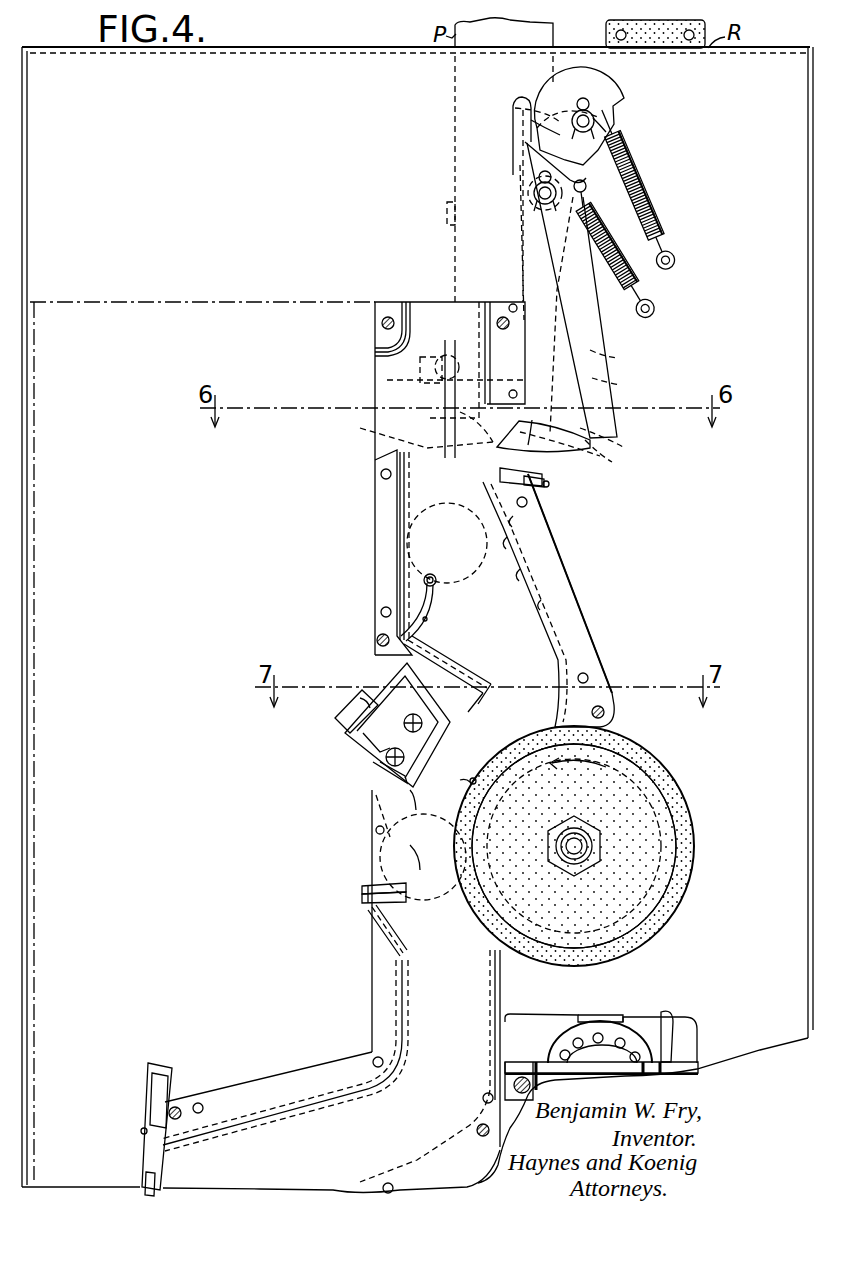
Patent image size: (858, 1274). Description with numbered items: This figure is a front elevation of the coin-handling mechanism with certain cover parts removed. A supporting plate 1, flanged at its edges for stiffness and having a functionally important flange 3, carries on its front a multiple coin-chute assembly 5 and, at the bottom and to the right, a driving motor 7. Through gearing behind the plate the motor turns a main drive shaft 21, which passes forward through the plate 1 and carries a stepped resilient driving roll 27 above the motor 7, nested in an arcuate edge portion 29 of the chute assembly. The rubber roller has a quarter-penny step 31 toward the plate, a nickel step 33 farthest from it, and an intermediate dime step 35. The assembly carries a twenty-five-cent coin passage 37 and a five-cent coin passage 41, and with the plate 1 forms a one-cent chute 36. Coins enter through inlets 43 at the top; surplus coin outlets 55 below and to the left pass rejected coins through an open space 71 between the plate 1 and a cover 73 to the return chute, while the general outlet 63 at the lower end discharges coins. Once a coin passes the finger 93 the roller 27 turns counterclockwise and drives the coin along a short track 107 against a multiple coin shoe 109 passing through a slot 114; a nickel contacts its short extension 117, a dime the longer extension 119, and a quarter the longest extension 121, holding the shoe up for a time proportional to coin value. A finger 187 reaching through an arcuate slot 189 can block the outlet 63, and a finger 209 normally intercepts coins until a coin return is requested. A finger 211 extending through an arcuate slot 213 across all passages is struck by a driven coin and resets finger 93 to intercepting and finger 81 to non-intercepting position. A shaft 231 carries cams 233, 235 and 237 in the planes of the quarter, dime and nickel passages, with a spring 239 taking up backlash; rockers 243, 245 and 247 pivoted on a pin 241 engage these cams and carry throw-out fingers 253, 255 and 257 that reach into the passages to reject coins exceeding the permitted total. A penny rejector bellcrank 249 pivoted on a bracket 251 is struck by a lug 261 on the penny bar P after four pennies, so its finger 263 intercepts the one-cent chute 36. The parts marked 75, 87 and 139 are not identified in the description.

The supporting plate 1 is at (278, 72).
The flange 3 is at (254, 52).
The multiple coin-chute assembly 5 is at (363, 540).
The driving motor 7 is at (640, 1032).
The main drive shaft 21 is at (588, 850).
The stepped resilient driving roll 27 is at (706, 849).
The arcuate edge portion 29 is at (470, 782).
The quarter-penny step 31 is at (654, 780).
The nickel step 33 is at (683, 800).
The dime step 35 is at (518, 552).
The one-cent chute 36 is at (524, 528).
The twenty-five-cent coin passage 37 is at (398, 492).
The five-cent coin passage 41 is at (478, 316).
The inlets 43 is at (418, 291).
The surplus coin outlets 55 is at (378, 380).
The general outlet 63 is at (310, 1130).
The open space 71 is at (180, 731).
The cover 73 is at (190, 300).
The plate 75 is at (540, 472).
The finger 81 is at (548, 484).
The link 87 is at (428, 622).
The finger 93 is at (436, 588).
The short track 107 is at (448, 694).
The multiple coin shoe 109 is at (372, 752).
The slot 114 is at (342, 735).
The short extension 117 is at (450, 728).
The longer extension 119 is at (426, 798).
The longest extension 121 is at (423, 857).
The plate R mounting 139 is at (655, 45).
The finger 187 is at (164, 1078).
The arcuate slot 189 is at (141, 1131).
The finger 209 is at (146, 1178).
The finger 211 is at (360, 892).
The arcuate slot 213 is at (364, 905).
The shaft 231 is at (604, 127).
The cam 233 is at (533, 118).
The cam 235 is at (602, 78).
The cam 237 is at (613, 108).
The spring 239 is at (645, 180).
The pin 241 is at (545, 210).
The rocker 243 is at (612, 360).
The rocker 245 is at (612, 387).
The rocker 247 is at (585, 318).
The penny rejector bellcrank 249 is at (436, 397).
The bracket 251 is at (430, 356).
The throw-out finger 253 is at (438, 418).
The throw-out finger 255 is at (582, 458).
The throw-out finger 257 is at (468, 412).
The lug 261 is at (446, 202).
The finger 263 is at (372, 430).